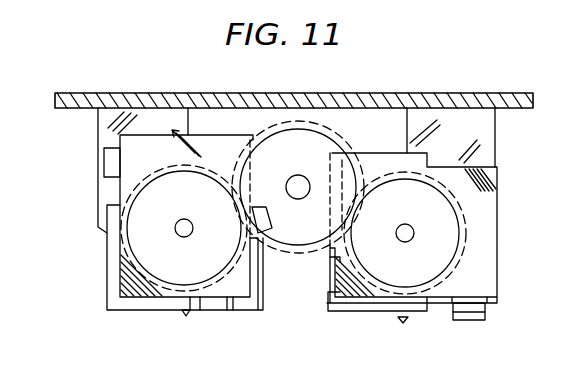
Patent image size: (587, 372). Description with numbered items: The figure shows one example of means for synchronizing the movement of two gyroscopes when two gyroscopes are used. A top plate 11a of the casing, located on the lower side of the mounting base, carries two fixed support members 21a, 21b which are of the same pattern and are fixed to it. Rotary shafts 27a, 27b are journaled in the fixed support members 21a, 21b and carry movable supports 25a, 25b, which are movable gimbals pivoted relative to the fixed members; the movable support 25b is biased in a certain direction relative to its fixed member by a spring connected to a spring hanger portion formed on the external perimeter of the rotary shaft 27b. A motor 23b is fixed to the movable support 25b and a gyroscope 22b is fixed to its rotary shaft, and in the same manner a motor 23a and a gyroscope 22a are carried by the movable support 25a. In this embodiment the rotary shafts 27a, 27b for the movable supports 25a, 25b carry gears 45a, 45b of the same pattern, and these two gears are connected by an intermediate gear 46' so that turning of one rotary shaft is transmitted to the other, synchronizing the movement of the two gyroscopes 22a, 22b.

The top plate 11a is at (230, 104).
The fixed support member 21a is at (455, 130).
The fixed support member 21b is at (157, 118).
The gyroscope 22a is at (332, 302).
The gyroscope 22b is at (107, 277).
The motor 23a is at (485, 312).
The motor 23b is at (103, 160).
The movable support 25a is at (498, 193).
The movable support 25b is at (120, 187).
The rotary shaft 27a is at (414, 233).
The rotary shaft 27b is at (184, 237).
The gear 45a is at (448, 252).
The gear 45b is at (207, 268).
The intermediate gear 46' is at (298, 164).